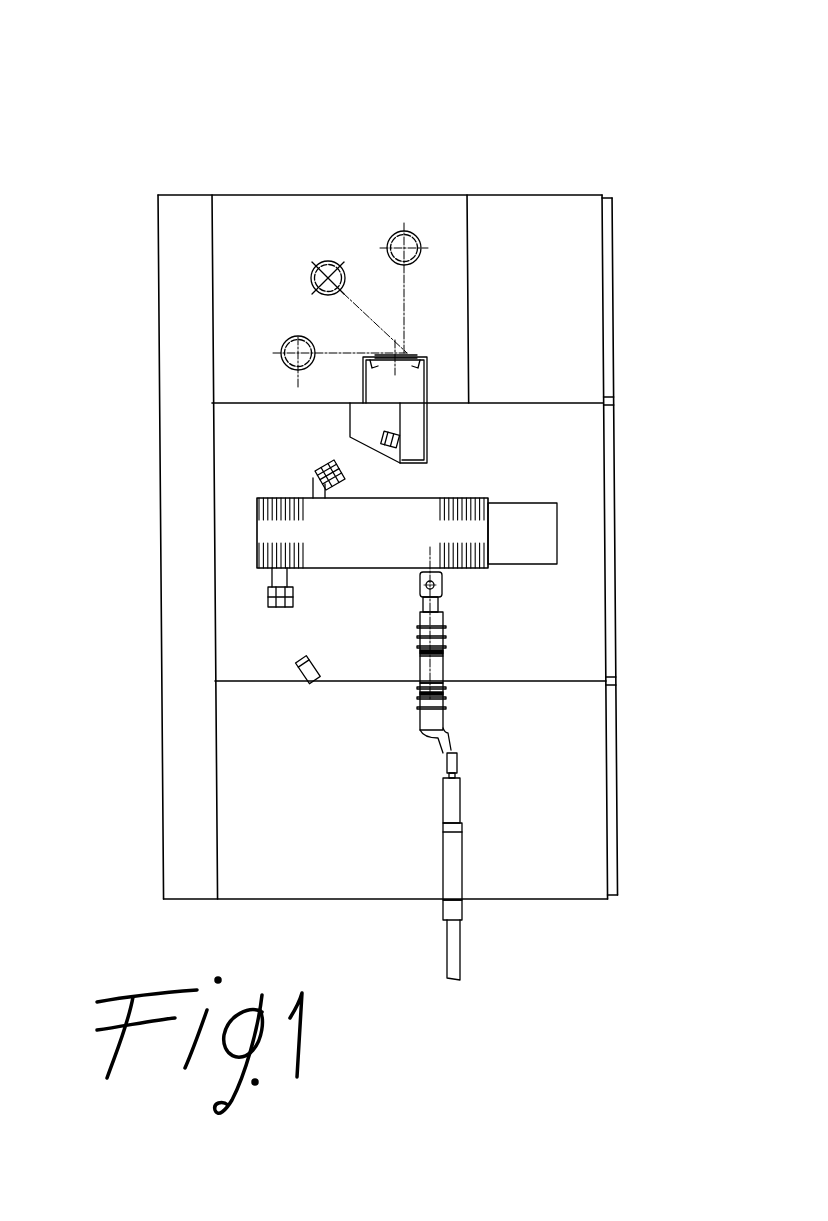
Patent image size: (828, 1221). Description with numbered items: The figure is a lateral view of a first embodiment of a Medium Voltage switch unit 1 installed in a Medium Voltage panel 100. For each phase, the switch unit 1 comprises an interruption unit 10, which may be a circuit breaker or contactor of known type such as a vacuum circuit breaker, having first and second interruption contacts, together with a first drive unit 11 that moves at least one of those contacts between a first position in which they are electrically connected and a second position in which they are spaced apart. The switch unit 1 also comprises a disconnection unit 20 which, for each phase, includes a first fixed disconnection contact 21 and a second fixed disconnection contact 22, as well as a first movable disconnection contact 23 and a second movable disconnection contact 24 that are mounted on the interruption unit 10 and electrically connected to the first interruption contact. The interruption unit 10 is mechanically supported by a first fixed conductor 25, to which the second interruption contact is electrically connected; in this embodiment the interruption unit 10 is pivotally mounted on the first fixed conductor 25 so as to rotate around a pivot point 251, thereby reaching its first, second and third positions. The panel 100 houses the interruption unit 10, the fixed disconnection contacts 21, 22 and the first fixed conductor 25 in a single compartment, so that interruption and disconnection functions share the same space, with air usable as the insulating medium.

The Medium Voltage panel 100 is at (303, 86).
The Medium Voltage switch unit 1 is at (500, 439).
The interruption unit 10 is at (417, 518).
The first drive unit 11 is at (537, 545).
The disconnection unit 20 is at (360, 627).
The first fixed disconnection contact 21 is at (305, 657).
The second fixed disconnection contact 22 is at (392, 435).
The first movable disconnection contact 23 is at (268, 594).
The second movable disconnection contact 24 is at (310, 473).
The first fixed conductor 25 is at (435, 603).
The pivot point 251 is at (443, 587).